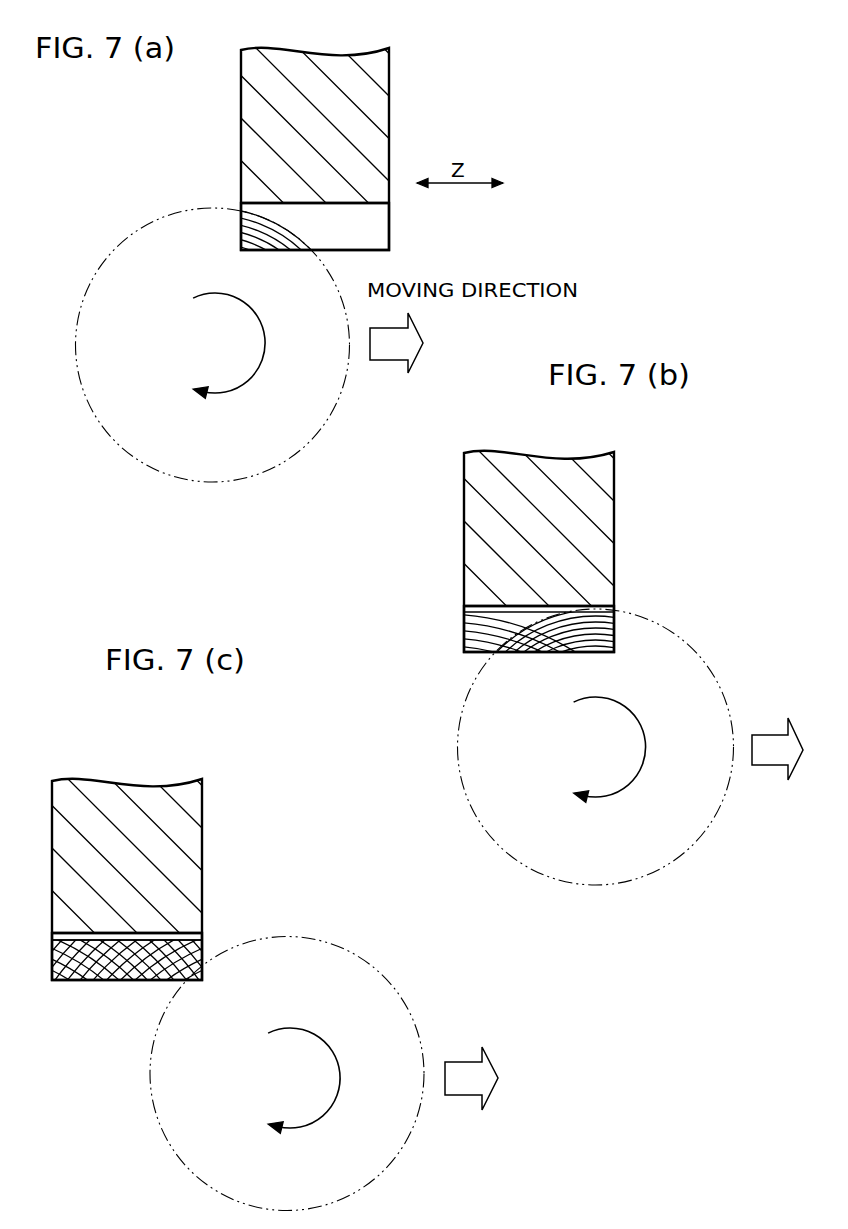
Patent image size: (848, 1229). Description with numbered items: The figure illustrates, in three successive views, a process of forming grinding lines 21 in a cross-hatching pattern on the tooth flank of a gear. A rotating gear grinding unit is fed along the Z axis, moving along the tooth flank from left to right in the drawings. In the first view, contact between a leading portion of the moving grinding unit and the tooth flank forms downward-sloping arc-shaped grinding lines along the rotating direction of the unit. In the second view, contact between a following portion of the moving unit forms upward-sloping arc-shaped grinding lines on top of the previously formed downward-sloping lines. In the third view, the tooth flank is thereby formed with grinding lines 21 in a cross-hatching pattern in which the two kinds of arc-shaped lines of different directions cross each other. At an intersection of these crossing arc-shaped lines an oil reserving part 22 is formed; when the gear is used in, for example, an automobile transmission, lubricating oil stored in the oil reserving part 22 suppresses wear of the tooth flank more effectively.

The grinding lines 21 is at (300, 1034).
The oil reserving part 22 is at (135, 968).